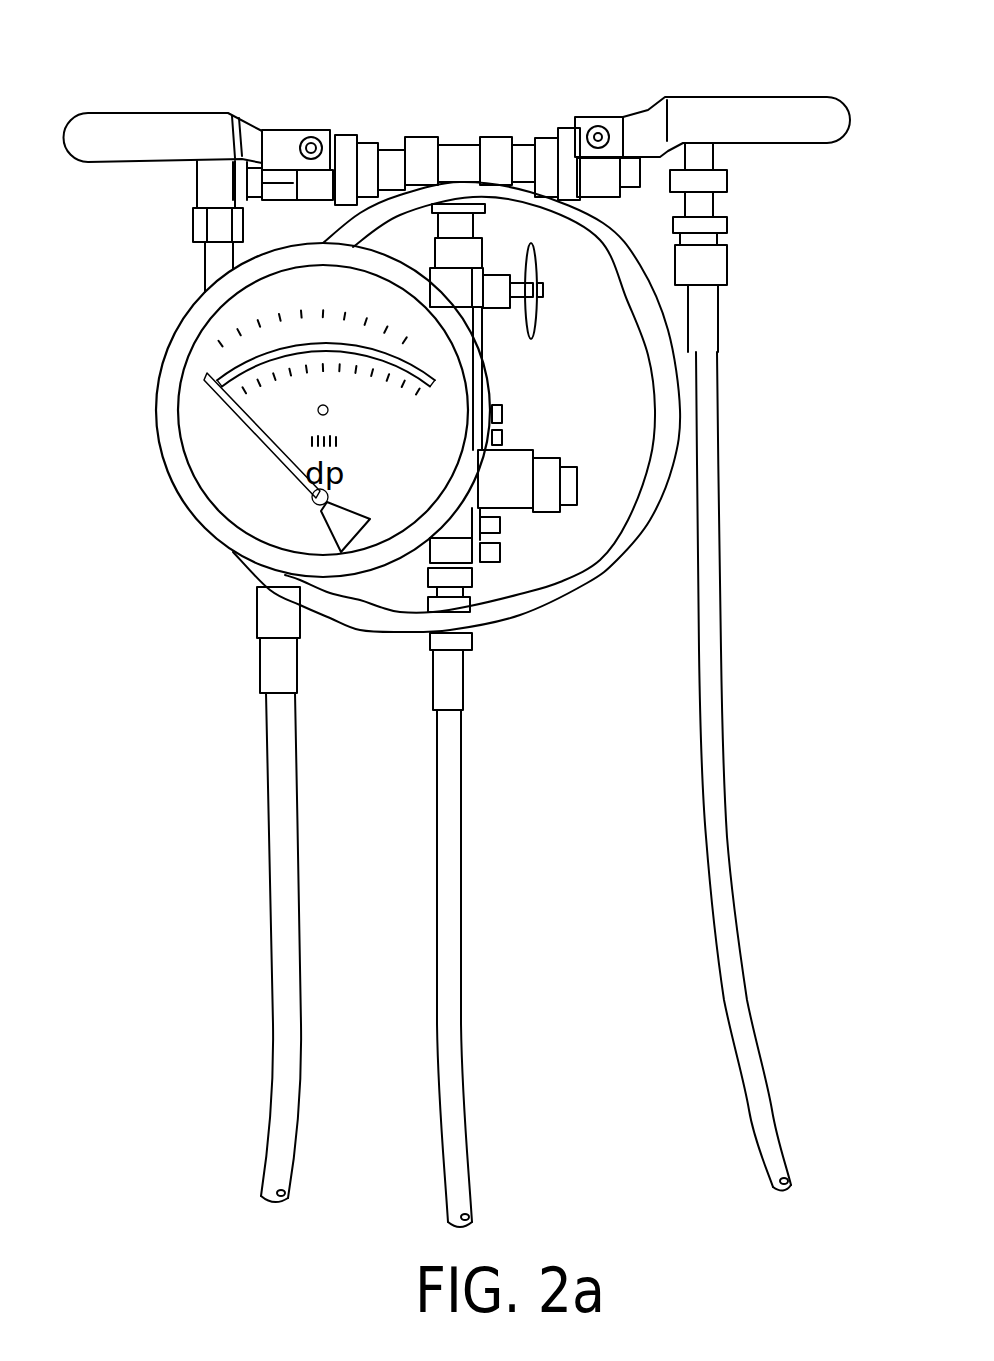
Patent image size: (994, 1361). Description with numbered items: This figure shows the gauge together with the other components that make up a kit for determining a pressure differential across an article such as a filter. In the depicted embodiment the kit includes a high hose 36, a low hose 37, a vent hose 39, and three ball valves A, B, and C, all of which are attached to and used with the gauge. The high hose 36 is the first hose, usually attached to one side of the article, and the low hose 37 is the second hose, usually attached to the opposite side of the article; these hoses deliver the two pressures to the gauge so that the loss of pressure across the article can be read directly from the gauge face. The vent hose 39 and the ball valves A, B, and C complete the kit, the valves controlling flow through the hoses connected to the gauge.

The ball valve A is at (143, 128).
The ball valve B is at (536, 315).
The ball valve C is at (755, 108).
The high hose 36 is at (463, 1072).
The low hose 37 is at (270, 1127).
The vent hose 39 is at (753, 1057).